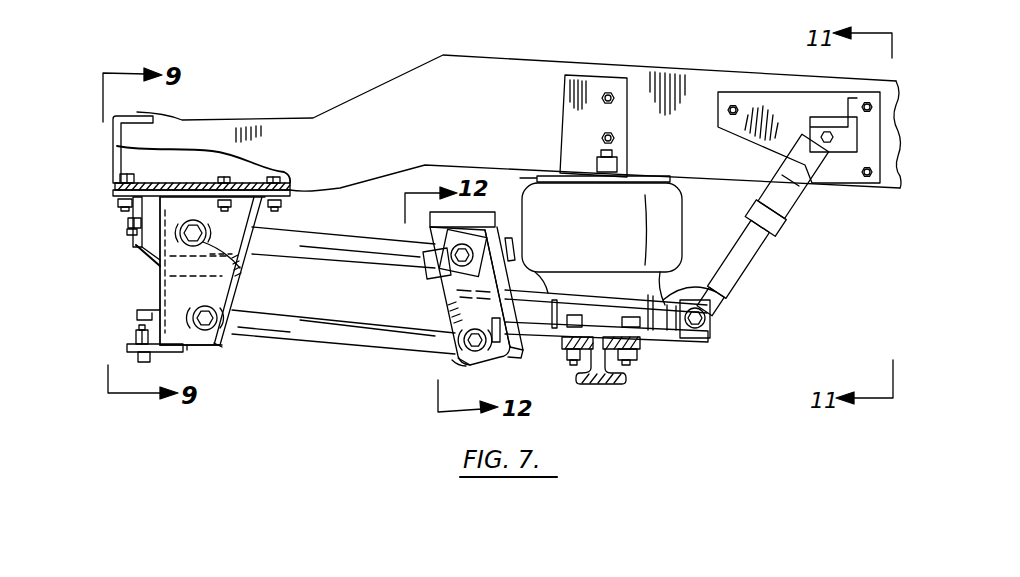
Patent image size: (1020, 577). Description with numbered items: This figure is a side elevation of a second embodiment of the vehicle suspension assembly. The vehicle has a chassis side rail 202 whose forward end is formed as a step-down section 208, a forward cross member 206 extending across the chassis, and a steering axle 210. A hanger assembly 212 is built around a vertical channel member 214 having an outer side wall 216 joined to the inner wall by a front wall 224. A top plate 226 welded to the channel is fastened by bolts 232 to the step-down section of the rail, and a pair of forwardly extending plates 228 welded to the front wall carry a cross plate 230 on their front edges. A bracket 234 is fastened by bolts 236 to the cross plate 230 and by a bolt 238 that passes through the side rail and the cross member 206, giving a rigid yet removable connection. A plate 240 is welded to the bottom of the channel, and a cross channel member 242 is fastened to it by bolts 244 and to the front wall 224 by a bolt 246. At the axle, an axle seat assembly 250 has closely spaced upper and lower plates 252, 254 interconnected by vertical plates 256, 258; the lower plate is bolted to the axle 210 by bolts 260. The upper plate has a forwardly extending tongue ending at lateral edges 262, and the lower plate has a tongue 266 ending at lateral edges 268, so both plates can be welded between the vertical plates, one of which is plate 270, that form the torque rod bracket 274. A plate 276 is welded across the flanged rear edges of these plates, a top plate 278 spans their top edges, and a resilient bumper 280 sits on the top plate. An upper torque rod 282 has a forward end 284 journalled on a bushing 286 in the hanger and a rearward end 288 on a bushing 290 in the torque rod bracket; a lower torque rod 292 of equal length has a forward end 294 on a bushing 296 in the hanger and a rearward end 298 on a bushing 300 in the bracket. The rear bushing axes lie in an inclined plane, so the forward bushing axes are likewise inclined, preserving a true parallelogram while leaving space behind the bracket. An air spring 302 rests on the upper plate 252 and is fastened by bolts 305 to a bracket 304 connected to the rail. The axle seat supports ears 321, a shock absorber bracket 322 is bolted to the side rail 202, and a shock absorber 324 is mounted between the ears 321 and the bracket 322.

The chassis side rail 202 is at (684, 80).
The forward cross member 206 is at (111, 147).
The step-down section 208 is at (280, 128).
The steering axle 210 is at (603, 384).
The hanger assembly 212 is at (221, 352).
The vertical channel member 214 is at (198, 348).
The outer side wall 216 is at (178, 205).
The front wall 224 is at (160, 290).
The top plate 226 is at (197, 183).
The forwardly extending plates 228 is at (148, 252).
The cross plate 230 is at (143, 243).
The bolts 232 is at (280, 163).
The bracket 234 is at (131, 213).
The bolts 236 is at (127, 229).
The bolt 238 is at (116, 203).
The plate 240 is at (130, 345).
The cross channel member 242 is at (142, 312).
The bolts 244 is at (138, 355).
The bolt 246 is at (140, 327).
The axle seat assembly 250 is at (664, 352).
The upper plate 252 is at (727, 291).
The lower plate 254 is at (689, 342).
The vertical plate 256 is at (553, 330).
The vertical plate 258 is at (653, 323).
The bolts 260 is at (448, 285).
The lateral edges 262 is at (510, 283).
The tongue 266 is at (498, 357).
The lateral edges 268 is at (511, 357).
The vertical plate 270 is at (462, 318).
The torque rod bracket 274 is at (450, 366).
The plate 276 is at (502, 230).
The top plate 278 is at (500, 213).
The resilient bumper 280 is at (480, 212).
The upper torque rod 282 is at (372, 226).
The forward end 284 is at (204, 237).
The bushing 286 is at (246, 263).
The rearward end 288 is at (420, 255).
The bushing 290 is at (445, 276).
The lower torque rod 292 is at (333, 333).
The forward end 294 is at (203, 306).
The bushing 296 is at (222, 343).
The rearward end 298 is at (453, 363).
The bushing 300 is at (478, 352).
The air spring 302 is at (668, 212).
The bracket 304 is at (598, 82).
The bolts 305 is at (614, 168).
The ears 321 is at (710, 327).
The shock absorber bracket 322 is at (824, 123).
The shock absorber 324 is at (760, 242).